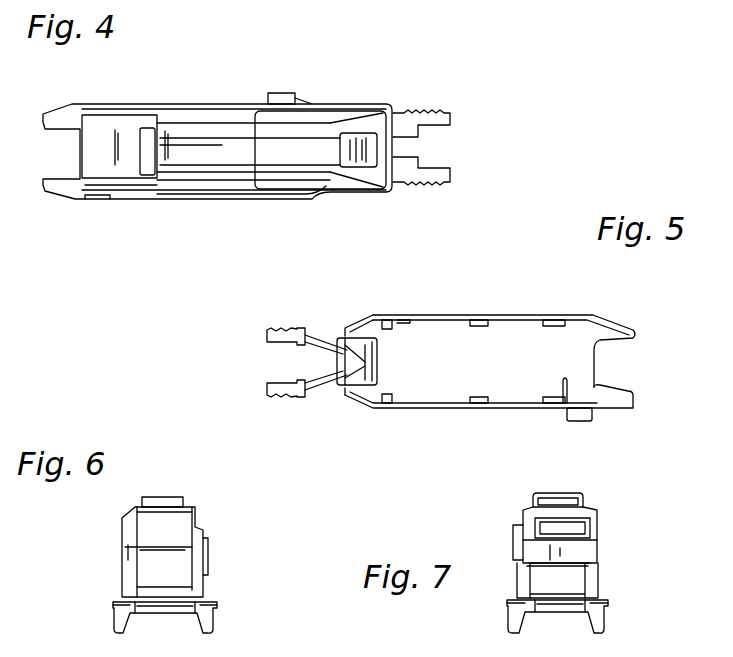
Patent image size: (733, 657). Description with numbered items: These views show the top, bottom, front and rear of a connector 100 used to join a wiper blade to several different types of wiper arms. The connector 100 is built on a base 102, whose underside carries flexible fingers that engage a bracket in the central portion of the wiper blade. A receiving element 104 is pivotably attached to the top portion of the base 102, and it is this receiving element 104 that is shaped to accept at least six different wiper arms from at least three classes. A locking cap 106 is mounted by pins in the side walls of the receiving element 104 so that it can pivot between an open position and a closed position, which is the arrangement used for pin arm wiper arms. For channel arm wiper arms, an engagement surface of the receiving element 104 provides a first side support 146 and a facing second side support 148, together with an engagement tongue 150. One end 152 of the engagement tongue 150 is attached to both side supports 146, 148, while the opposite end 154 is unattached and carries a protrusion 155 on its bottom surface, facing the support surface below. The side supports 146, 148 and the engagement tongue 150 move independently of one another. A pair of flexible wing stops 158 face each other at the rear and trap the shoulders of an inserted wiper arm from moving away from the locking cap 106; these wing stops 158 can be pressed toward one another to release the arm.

In FIG. 4, the connector 100 is at (161, 259).
In FIG. 5, the connector 100 is at (462, 300).
In FIG. 6, the connector 100 is at (57, 582).
In FIG. 7, the connector 100 is at (480, 513).
In FIG. 4, the base 102 is at (76, 104).
In FIG. 5, the base 102 is at (492, 410).
In FIG. 6, the base 102 is at (212, 622).
In FIG. 7, the base 102 is at (597, 620).
In FIG. 7, the receiving element 104 is at (596, 578).
In FIG. 6, the locking cap 106 is at (182, 525).
In FIG. 4, the first side support 146 is at (253, 127).
In FIG. 4, the second side support 148 is at (246, 178).
In FIG. 4, the engagement tongue 150 is at (225, 147).
In FIG. 4, the end of the engagement tongue 152 is at (175, 143).
In FIG. 4, the opposite end of the engagement tongue 154 is at (325, 145).
In FIG. 7, the protrusion 155 is at (577, 520).
In FIG. 4, the flexible wing stops 158 is at (432, 112).
In FIG. 5, the flexible wing stops 158 is at (268, 332).